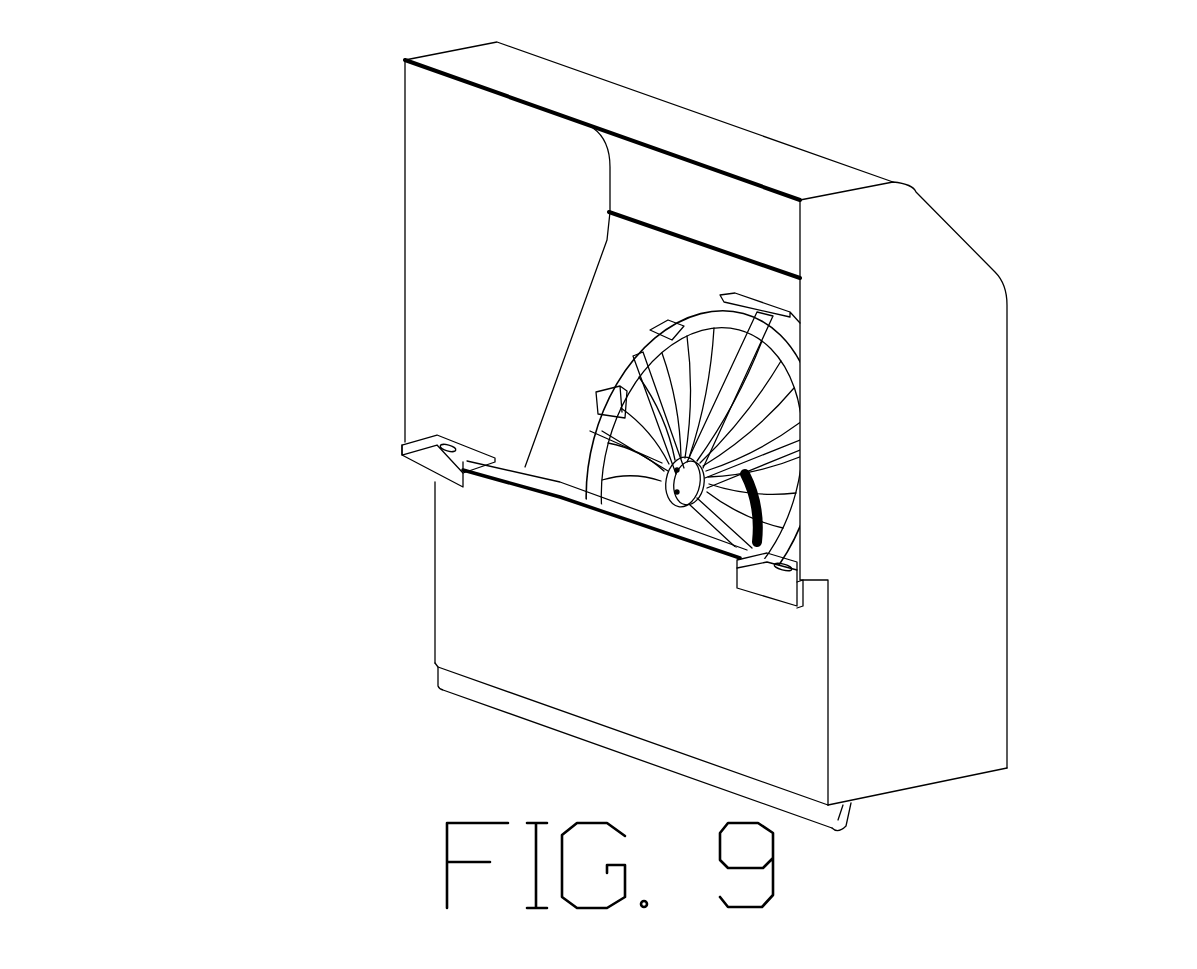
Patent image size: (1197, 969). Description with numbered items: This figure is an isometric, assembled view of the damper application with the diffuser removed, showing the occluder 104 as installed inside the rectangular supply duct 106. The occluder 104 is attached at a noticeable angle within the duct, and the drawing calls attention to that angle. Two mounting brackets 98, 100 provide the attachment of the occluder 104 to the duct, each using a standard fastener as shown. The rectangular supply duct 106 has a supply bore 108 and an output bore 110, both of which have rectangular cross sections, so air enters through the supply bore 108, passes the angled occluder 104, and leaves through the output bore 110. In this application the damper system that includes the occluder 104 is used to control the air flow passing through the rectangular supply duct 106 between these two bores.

The mounting bracket 98 is at (423, 445).
The mounting bracket 100 is at (782, 592).
The occluder 104 is at (633, 363).
The rectangular supply duct 106 is at (898, 382).
The supply bore 108 is at (905, 797).
The output bore 110 is at (458, 190).